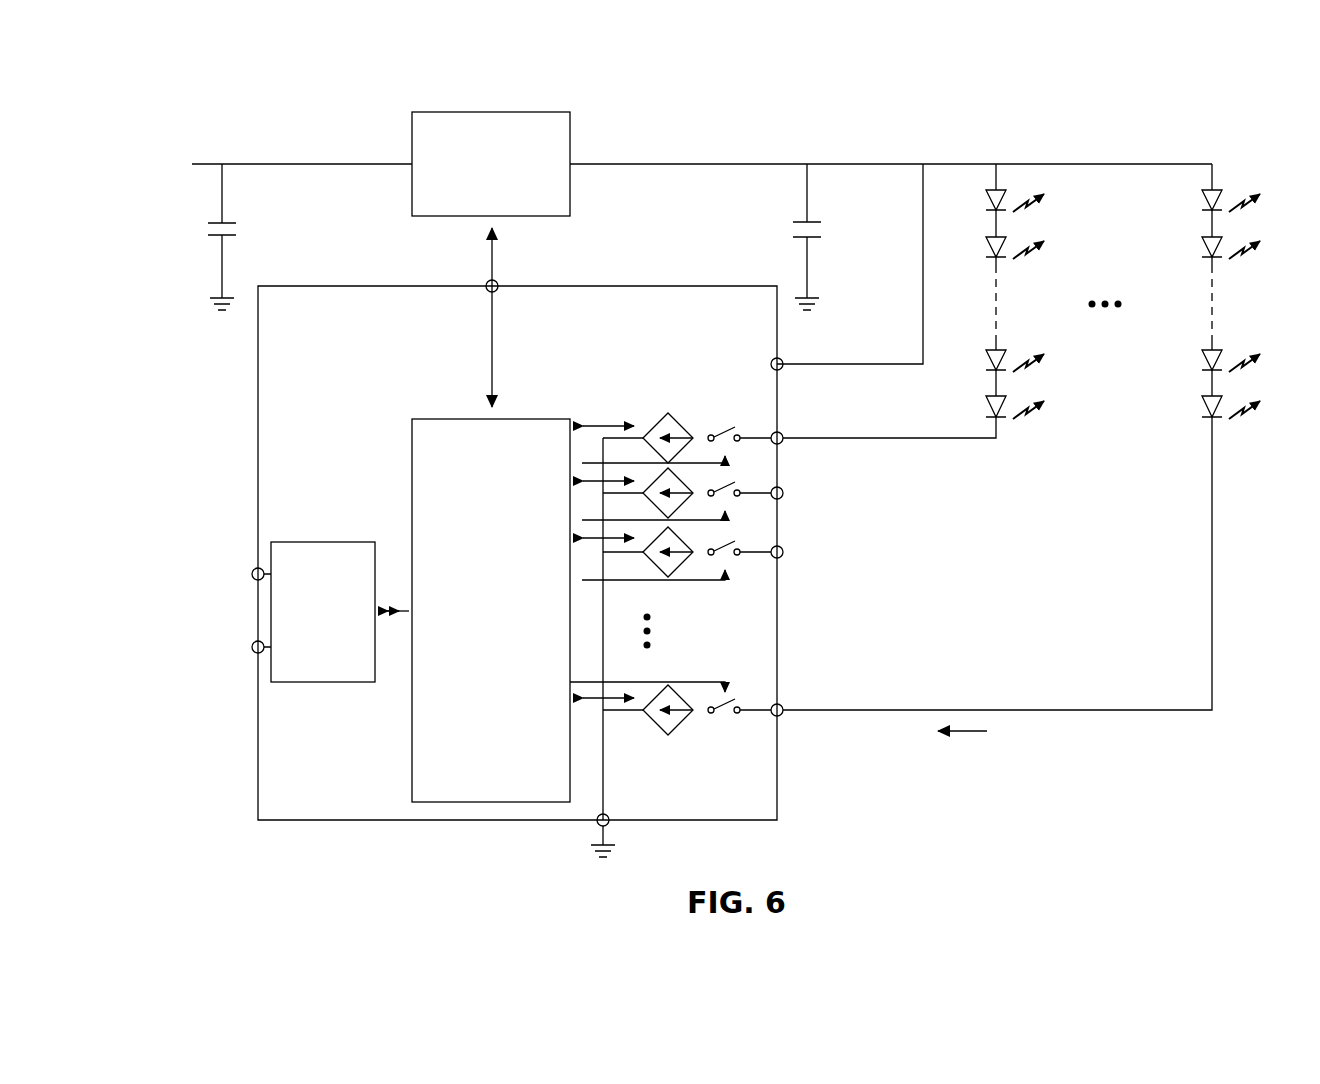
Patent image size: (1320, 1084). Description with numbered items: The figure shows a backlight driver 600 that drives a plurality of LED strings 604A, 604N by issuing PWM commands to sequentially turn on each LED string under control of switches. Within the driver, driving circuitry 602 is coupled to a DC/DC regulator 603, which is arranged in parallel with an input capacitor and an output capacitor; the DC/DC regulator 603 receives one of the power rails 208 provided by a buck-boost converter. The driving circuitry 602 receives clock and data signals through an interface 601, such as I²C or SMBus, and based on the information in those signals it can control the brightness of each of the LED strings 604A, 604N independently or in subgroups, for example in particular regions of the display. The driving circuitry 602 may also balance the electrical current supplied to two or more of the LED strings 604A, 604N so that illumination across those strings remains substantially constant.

The backlight driver 600 is at (205, 114).
The power rail 208 is at (314, 163).
The DC/DC regulator 603 is at (470, 207).
The driving circuitry 602 is at (478, 418).
The interface 601 is at (337, 540).
The LED string 604A is at (988, 462).
The LED string 604N is at (1196, 360).